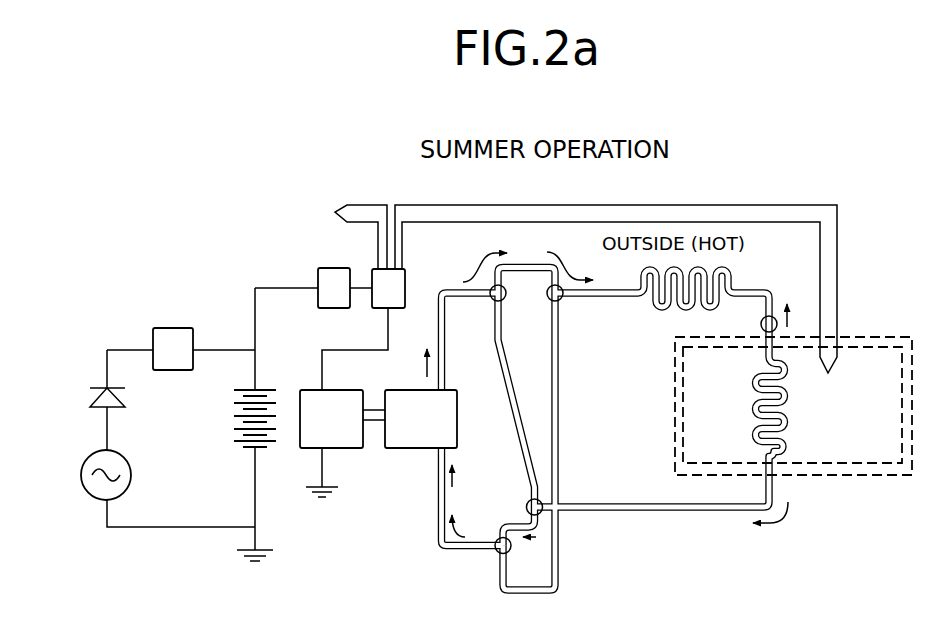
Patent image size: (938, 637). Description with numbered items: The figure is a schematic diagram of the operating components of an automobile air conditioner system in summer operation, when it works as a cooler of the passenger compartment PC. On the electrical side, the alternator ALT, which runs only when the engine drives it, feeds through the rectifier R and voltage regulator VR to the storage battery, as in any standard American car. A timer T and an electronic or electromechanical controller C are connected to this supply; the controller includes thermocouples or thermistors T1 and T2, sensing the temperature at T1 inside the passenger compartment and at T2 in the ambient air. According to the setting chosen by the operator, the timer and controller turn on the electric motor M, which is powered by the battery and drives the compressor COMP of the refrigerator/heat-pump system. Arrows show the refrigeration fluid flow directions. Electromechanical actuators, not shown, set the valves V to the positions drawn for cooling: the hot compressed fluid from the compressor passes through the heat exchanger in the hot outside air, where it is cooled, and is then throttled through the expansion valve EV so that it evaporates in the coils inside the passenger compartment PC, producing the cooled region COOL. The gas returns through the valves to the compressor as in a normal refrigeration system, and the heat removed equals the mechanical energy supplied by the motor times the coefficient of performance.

The timer T is at (334, 288).
The controller C is at (388, 288).
The voltage regulator VR is at (173, 349).
The rectifier R is at (115, 396).
The alternator ALT is at (121, 482).
The electric motor M is at (331, 419).
The compressor COMP is at (421, 419).
The valves V is at (531, 428).
The expansion valve EV is at (755, 326).
The thermocouple or thermistor T1 is at (626, 299).
The thermocouple or thermistor T2 is at (345, 237).
The passenger compartment PC is at (793, 406).
The cooled space COOL is at (838, 420).